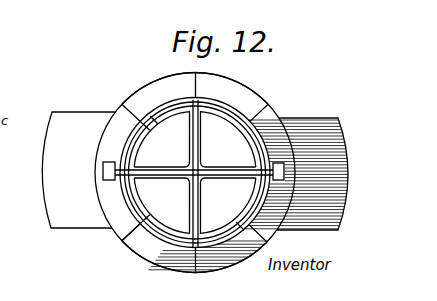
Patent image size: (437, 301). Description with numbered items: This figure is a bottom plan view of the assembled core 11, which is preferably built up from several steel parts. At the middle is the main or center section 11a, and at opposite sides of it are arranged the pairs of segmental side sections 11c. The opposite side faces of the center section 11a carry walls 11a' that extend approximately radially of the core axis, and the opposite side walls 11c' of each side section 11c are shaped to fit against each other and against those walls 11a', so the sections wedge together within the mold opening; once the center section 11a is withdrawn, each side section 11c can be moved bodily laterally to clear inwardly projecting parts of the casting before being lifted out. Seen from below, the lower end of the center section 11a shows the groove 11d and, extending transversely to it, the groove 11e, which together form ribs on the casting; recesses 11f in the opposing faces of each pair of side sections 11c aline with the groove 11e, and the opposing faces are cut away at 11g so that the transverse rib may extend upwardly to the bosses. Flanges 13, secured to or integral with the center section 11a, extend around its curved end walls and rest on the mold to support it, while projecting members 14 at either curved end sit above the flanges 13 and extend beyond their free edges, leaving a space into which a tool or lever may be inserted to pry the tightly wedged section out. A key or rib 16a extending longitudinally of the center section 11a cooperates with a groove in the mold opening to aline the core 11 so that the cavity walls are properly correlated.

The core 11 is at (115, 112).
The center section 11a is at (101, 219).
The walls 11a' is at (192, 173).
The segmental sections 11c is at (195, 173).
The side walls 11c' is at (197, 171).
The groove 11d is at (116, 156).
The groove 11e is at (194, 169).
The recesses 11f is at (244, 128).
The cut-away portions 11g is at (193, 97).
The flanges 13 is at (116, 226).
The projecting members 14 is at (44, 173).
The key or rib 16a is at (282, 238).